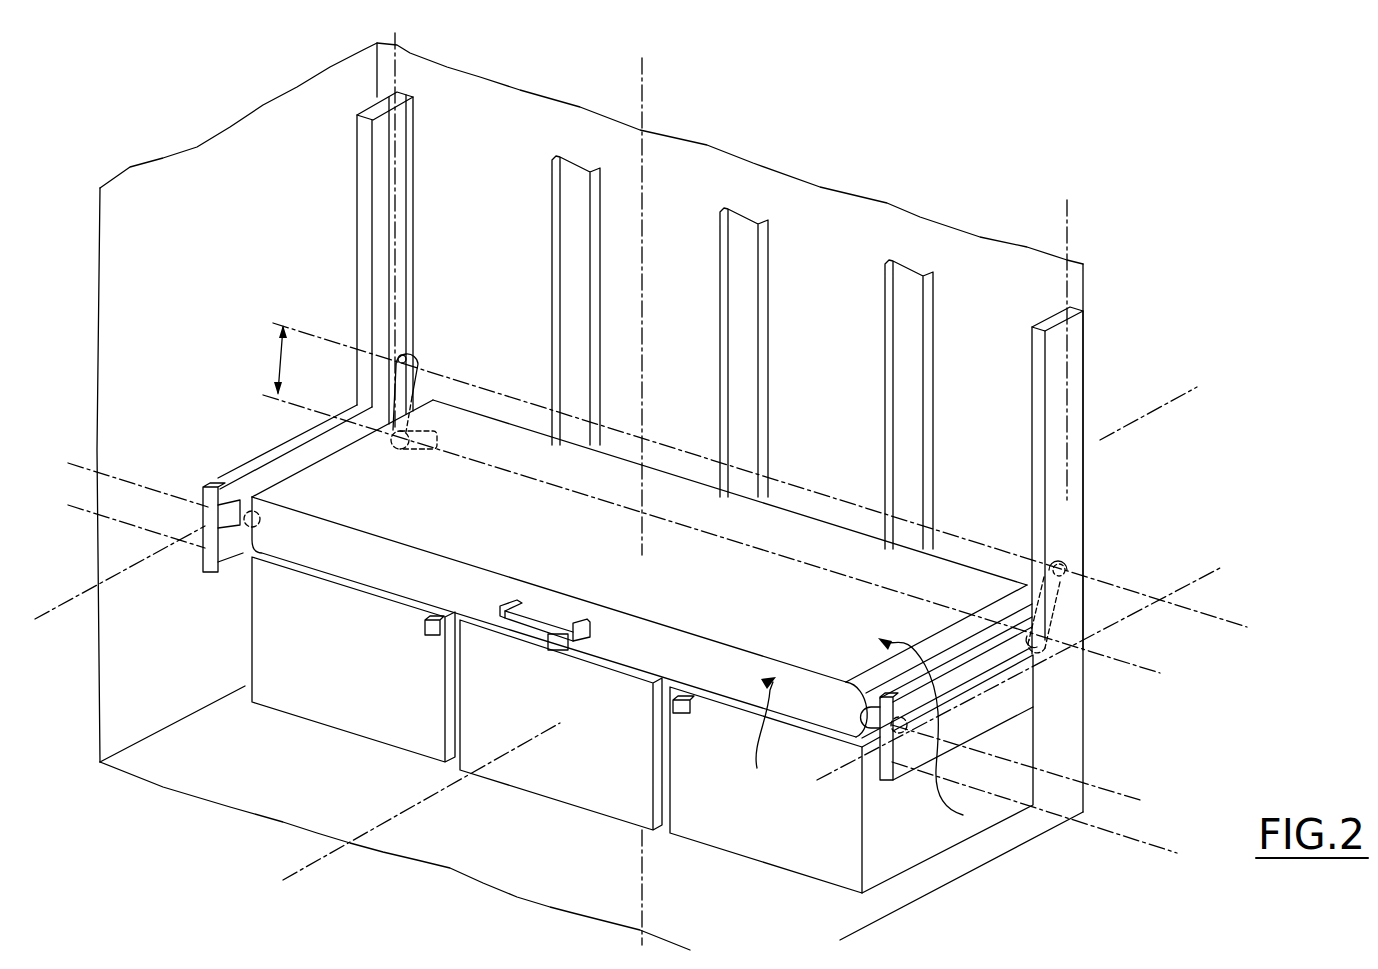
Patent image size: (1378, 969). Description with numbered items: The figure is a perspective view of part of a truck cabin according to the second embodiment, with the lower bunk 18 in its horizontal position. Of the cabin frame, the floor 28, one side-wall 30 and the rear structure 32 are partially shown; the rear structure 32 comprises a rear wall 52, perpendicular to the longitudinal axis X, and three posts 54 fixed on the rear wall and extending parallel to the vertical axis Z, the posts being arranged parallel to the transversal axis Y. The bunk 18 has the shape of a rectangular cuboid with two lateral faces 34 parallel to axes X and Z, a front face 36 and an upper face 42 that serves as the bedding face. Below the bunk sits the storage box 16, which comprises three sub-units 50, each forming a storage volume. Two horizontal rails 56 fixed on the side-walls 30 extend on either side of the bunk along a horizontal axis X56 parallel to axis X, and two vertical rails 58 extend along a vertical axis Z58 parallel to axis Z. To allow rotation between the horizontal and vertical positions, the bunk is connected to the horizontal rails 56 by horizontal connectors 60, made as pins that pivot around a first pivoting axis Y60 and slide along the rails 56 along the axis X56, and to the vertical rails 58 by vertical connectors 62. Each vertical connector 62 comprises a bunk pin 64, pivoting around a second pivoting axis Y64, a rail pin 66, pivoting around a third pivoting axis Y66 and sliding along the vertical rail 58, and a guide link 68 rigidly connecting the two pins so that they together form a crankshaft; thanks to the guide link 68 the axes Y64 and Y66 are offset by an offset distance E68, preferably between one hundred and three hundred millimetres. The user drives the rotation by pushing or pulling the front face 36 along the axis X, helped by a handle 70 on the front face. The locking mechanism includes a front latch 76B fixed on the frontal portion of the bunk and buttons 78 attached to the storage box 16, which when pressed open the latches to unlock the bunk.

The storage box 16 is at (642, 725).
The lower bunk 18 is at (642, 612).
The floor 28 is at (591, 818).
The side-wall 30 is at (590, 427).
The rear structure 32 is at (742, 327).
The lateral face 34 is at (893, 733).
The front face 36 is at (759, 735).
The upper face 42 is at (933, 731).
The sub-unit 50 is at (417, 737).
The rear wall 52 is at (912, 233).
The post 54 is at (742, 333).
The horizontal rail 56 is at (277, 472).
The vertical rail 58 is at (380, 174).
The horizontal connector 60 is at (238, 510).
The vertical connector 62 is at (729, 468).
The bunk pin 64 is at (433, 430).
The rail pin 66 is at (395, 356).
The guide link 68 is at (411, 380).
The handle 70 is at (557, 627).
The front latch 76B is at (555, 637).
The button 78 is at (425, 622).
The vertical axis Z is at (651, 497).
The vertical axis of the vertical rail Z58 is at (390, 63).
The longitudinal axis X is at (740, 642).
The horizontal axis of the horizontal rail X56 is at (43, 620).
The transversal axis Y is at (634, 685).
The first pivoting axis Y60 is at (1127, 797).
The second pivoting axis Y64 is at (1147, 673).
The third pivoting axis Y66 is at (1233, 627).
The offset distance E68 is at (265, 360).